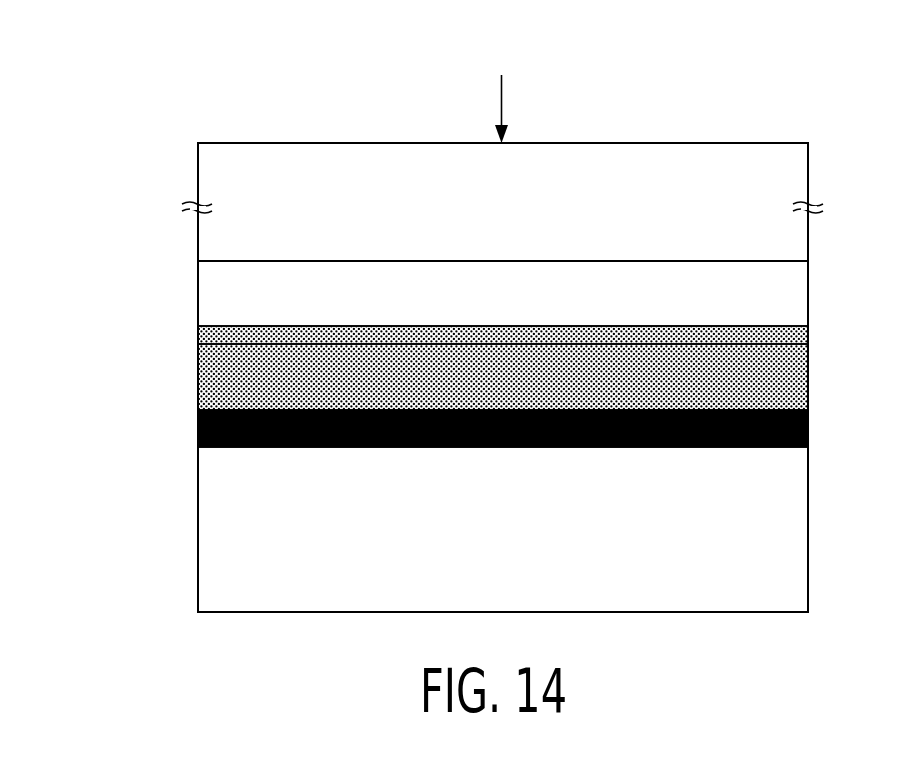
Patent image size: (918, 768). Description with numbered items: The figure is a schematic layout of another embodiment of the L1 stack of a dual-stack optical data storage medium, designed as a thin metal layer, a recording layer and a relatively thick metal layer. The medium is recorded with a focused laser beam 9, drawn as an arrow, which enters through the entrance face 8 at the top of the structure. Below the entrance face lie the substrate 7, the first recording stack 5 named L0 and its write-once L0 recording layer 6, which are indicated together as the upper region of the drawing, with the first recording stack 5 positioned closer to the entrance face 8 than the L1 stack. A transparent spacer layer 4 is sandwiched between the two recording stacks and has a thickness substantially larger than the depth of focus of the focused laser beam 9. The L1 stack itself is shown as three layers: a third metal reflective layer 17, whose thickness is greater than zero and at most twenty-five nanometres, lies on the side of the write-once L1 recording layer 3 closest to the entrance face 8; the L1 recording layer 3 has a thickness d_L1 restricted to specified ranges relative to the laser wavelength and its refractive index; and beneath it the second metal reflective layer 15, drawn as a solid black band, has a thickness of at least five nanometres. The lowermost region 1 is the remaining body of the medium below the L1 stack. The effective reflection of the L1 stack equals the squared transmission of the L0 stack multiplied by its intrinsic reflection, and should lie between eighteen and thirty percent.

The substrate 1 is at (220, 521).
The write-once L1 recording layer 3 is at (218, 381).
The transparent spacer layer 4 is at (220, 292).
The first recording stack 5 is at (220, 178).
The write-once L0 recording layer 6 is at (503, 202).
The substrate 7 is at (503, 202).
The entrance face 8 is at (300, 143).
The focused laser beam 9 is at (502, 100).
The second metal reflective layer 15 is at (198, 432).
The third metal reflective layer 17 is at (218, 338).